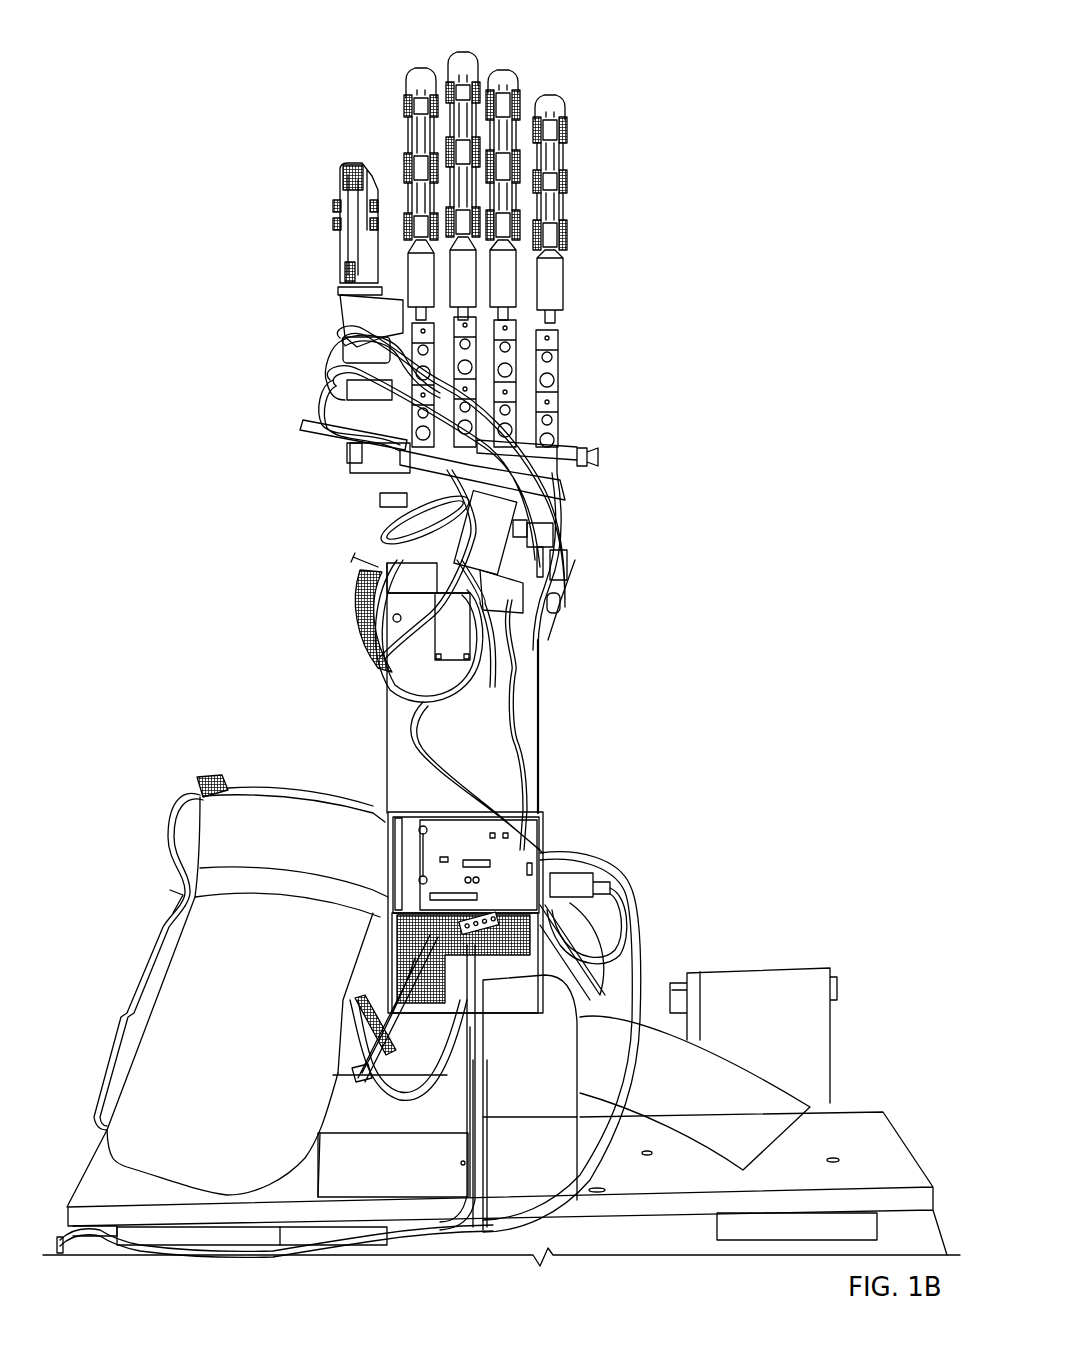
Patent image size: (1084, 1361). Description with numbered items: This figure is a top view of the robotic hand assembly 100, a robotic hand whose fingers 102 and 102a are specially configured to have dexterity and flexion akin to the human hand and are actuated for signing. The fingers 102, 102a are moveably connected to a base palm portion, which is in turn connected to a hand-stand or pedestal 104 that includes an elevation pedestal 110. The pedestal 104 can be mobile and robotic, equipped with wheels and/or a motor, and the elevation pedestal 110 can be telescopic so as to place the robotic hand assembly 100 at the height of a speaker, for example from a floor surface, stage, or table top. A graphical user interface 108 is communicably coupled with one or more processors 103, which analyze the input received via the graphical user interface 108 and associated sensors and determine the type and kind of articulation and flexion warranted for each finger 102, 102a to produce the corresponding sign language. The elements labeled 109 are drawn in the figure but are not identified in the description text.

The robotic hand assembly 100 is at (486, 349).
The fingers 102 is at (458, 75).
The finger 102a is at (357, 182).
The processors 103 is at (420, 830).
The pedestal 104 is at (470, 1147).
The graphical user interface 108 is at (787, 970).
The actuator / sensor unit 109 is at (348, 337).
The elevation pedestal 110 is at (398, 672).